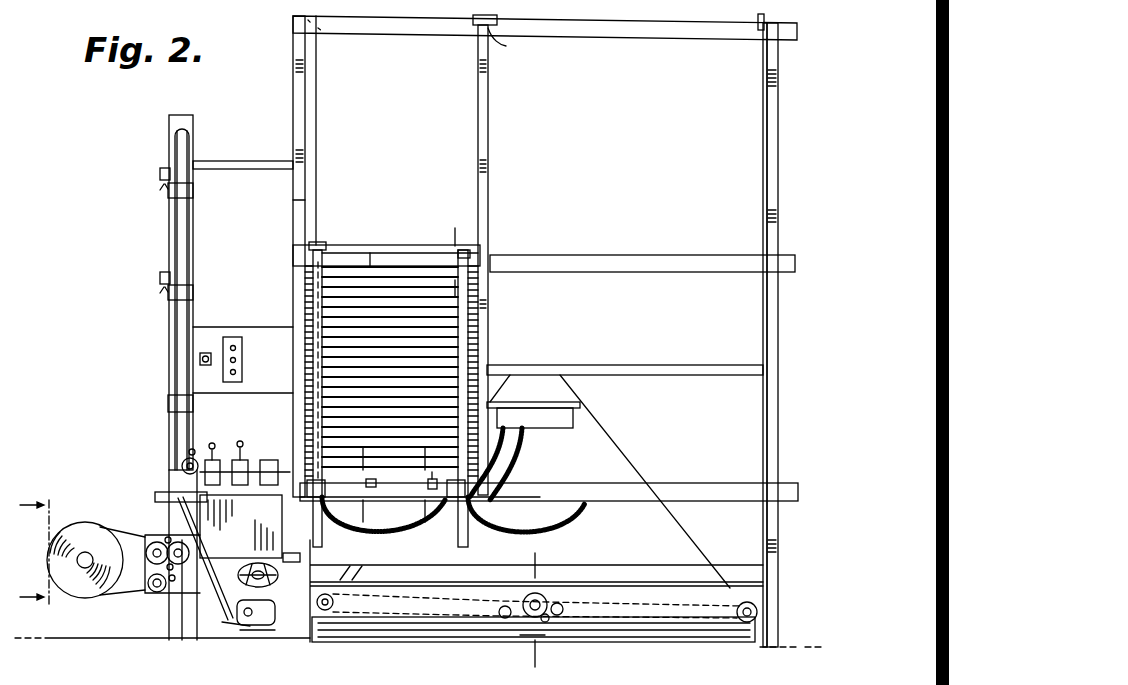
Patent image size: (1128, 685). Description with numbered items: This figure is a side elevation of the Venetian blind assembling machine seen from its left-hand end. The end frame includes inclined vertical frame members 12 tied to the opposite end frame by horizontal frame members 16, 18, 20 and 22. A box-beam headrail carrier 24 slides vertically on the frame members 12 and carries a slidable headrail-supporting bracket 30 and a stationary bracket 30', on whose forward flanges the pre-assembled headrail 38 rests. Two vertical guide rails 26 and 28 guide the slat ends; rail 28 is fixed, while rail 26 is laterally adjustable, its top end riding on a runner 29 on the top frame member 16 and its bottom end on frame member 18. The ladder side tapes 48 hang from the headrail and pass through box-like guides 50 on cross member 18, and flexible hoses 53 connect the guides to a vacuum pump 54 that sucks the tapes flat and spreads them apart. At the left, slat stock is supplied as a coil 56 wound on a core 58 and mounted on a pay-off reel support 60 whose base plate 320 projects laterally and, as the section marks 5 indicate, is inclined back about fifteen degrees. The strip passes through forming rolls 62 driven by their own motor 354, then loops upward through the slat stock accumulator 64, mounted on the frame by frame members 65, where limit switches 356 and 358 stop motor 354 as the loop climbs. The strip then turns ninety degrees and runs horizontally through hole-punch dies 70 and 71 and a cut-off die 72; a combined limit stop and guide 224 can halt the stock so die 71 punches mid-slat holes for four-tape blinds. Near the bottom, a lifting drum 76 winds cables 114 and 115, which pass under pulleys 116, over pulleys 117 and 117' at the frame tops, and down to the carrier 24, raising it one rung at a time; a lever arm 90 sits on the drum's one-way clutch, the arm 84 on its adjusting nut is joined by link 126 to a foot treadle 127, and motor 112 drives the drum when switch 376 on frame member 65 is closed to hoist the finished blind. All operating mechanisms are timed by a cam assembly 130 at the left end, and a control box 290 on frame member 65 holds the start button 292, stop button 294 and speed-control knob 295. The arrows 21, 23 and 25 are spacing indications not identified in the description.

The section line 5- 5 is at (34, 554).
The vertical frame member 12 is at (307, 117).
The horizontal frame member 16 is at (586, 35).
The horizontal frame member 18 is at (622, 499).
The horizontal frame member 20 is at (622, 643).
The spacing dimension 21 is at (422, 461).
The horizontal frame member 22 is at (614, 367).
The spacing dimension 23 is at (538, 563).
The headrail carrier 24 is at (608, 253).
The spacing dimension 25 is at (452, 238).
The guide rail 26 is at (490, 127).
The guide rail 28 is at (292, 201).
The runner 29 is at (366, 510).
The headrail-supporting bracket 30 is at (457, 221).
The headrail-supporting bracket 30' is at (336, 226).
The headrail 38 is at (372, 264).
The side tape 48 is at (470, 321).
The guide 50 is at (326, 491).
The flexible hose 53 is at (532, 471).
The vacuum pump 54 is at (553, 429).
The coil 56 is at (94, 531).
The core 58 is at (82, 558).
The pay-off reel support 60 is at (70, 603).
The forming rolls 62 is at (150, 574).
The slat stock accumulator 64 is at (168, 334).
The frame member 65 is at (236, 163).
The hole-punch die 70 is at (236, 461).
The hole-punch die 71 is at (272, 461).
The cut-off die 72 is at (243, 461).
The lifting drum 76 is at (528, 641).
The arm 84 is at (557, 603).
The lever arm 90 is at (523, 601).
The motor 112 is at (498, 613).
The cable 114 is at (319, 173).
The cable 115 is at (763, 145).
The pulley 116 is at (335, 600).
The pulley 117 is at (348, 40).
The pulley 117' is at (742, 41).
The link 126 is at (560, 618).
The foot treadle 127 is at (490, 633).
The cam assembly 130 is at (256, 633).
The combined limit stop and guide 224 is at (432, 477).
The control box 290 is at (235, 338).
The start button 292 is at (237, 360).
The stop button 294 is at (237, 372).
The motor speed-control knob 295 is at (237, 348).
The base plate 320 is at (148, 528).
The motor 354 is at (373, 478).
The limit switch 356 is at (158, 281).
The limit switch 358 is at (158, 175).
The switch 376 is at (199, 359).